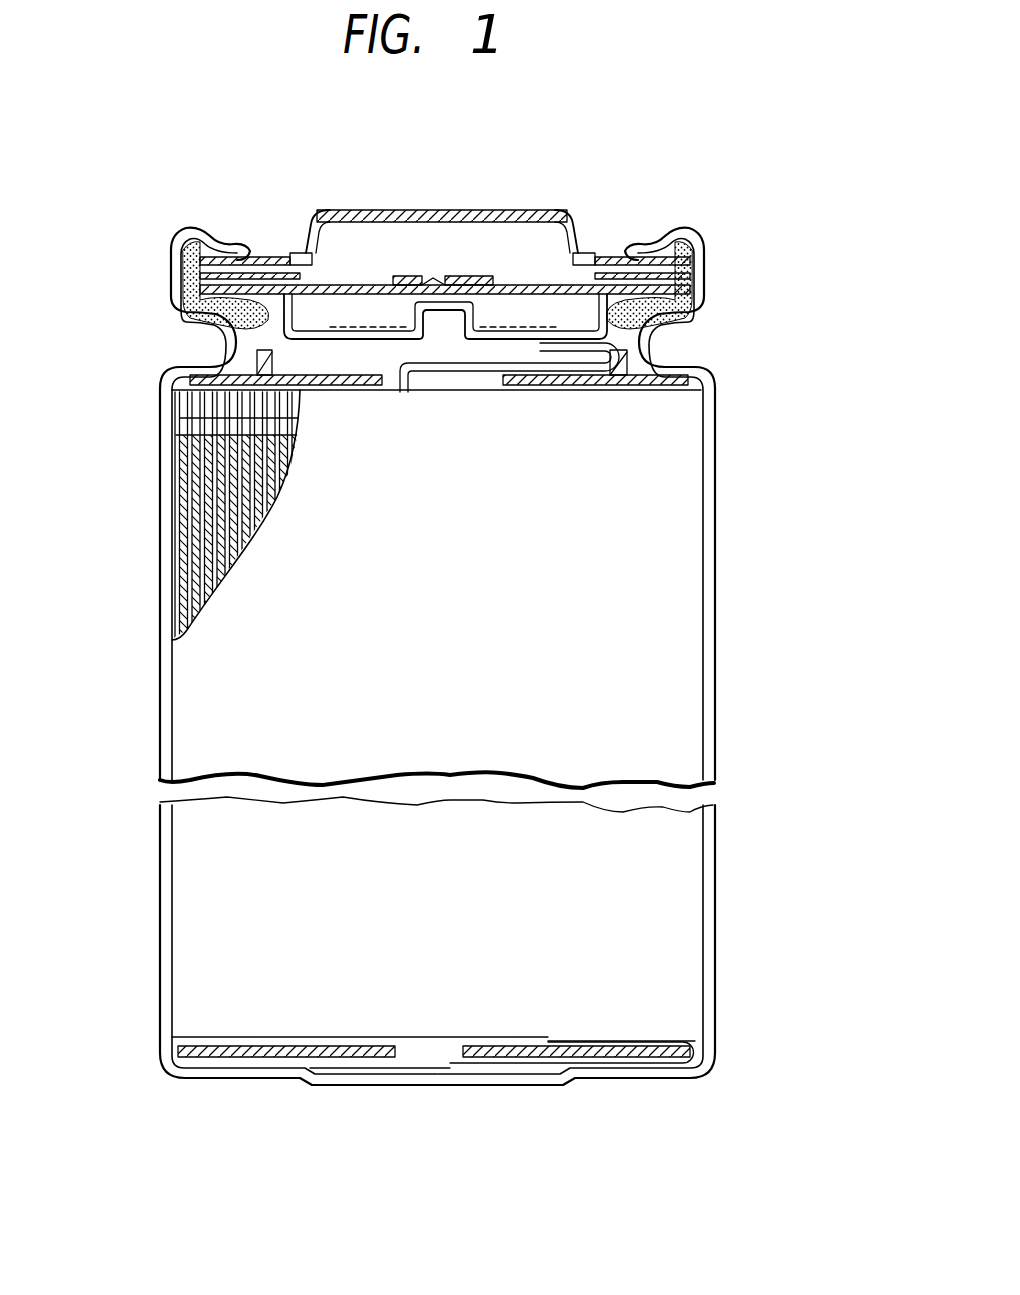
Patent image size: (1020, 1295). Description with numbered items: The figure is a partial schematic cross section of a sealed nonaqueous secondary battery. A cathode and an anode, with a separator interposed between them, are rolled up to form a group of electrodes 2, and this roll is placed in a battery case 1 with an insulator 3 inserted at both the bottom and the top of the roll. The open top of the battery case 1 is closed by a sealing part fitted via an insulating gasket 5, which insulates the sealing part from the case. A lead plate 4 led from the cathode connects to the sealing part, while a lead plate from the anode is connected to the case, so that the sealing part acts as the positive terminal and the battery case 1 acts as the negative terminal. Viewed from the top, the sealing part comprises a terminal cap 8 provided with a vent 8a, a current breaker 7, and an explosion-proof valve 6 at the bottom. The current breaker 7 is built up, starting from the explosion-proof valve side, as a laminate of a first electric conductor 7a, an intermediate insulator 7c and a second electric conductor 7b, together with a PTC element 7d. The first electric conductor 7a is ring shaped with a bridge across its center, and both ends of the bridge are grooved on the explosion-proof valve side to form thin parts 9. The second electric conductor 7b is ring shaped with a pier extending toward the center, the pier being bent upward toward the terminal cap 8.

The battery case 1 is at (715, 638).
The group of electrodes 2 is at (663, 567).
The insulator 3 is at (235, 368).
The lead plate 4 is at (477, 377).
The insulating gasket 5 is at (705, 287).
The explosion-proof valve 6 is at (413, 337).
The current breaker 7 is at (445, 196).
The first electric conductor 7a is at (522, 283).
The second electric conductor 7b is at (290, 273).
The intermediate insulator 7c is at (590, 280).
The PTC element 7d is at (642, 206).
The terminal cap 8 is at (397, 182).
The vent 8a is at (318, 208).
The thin parts 9 is at (443, 282).